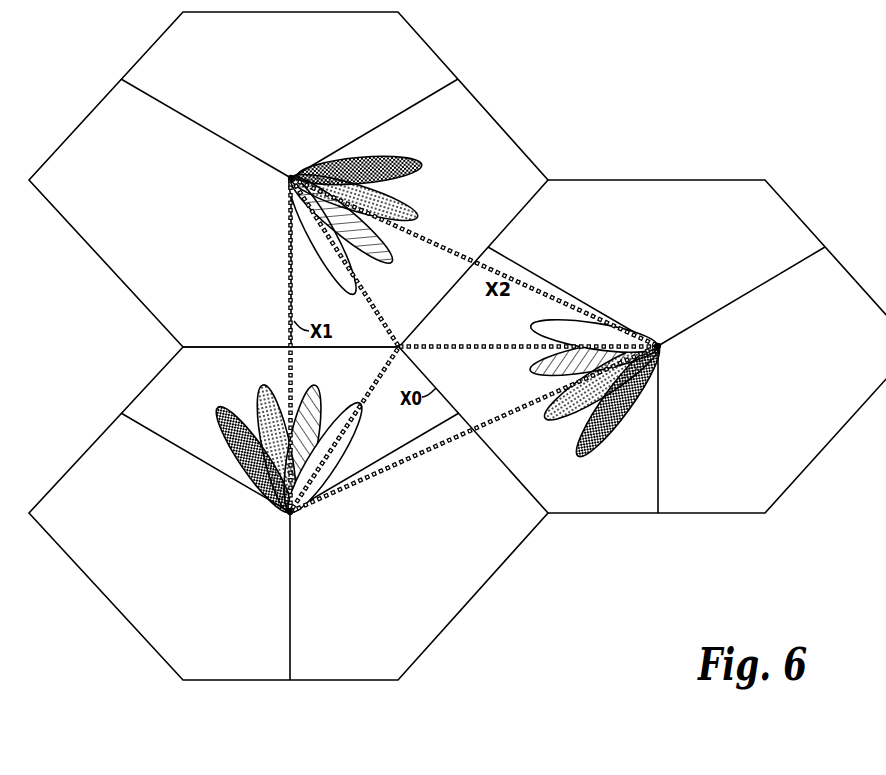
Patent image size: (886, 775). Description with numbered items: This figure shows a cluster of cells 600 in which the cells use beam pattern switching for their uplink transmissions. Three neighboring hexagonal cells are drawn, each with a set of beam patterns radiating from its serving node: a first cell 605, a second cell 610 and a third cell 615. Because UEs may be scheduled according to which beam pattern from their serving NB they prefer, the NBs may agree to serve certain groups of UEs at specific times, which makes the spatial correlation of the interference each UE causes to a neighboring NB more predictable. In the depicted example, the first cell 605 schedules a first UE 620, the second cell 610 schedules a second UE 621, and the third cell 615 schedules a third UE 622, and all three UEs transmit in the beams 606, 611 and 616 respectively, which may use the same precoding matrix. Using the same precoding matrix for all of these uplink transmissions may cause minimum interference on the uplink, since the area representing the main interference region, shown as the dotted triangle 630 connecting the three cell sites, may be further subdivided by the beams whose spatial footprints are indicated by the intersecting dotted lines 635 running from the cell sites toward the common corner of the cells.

The cluster of cells 600 is at (757, 40).
The cell 0 605 is at (289, 517).
The beam 606 is at (320, 485).
The cell 1 610 is at (287, 180).
The beam 611 is at (306, 243).
The cell 2 615 is at (662, 348).
The beam 616 is at (592, 328).
The UE X0 620 is at (434, 392).
The UE X1 621 is at (296, 322).
The UE X2 622 is at (496, 292).
The dotted triangle 630 is at (428, 245).
The intersecting dotted lines 635 is at (378, 311).